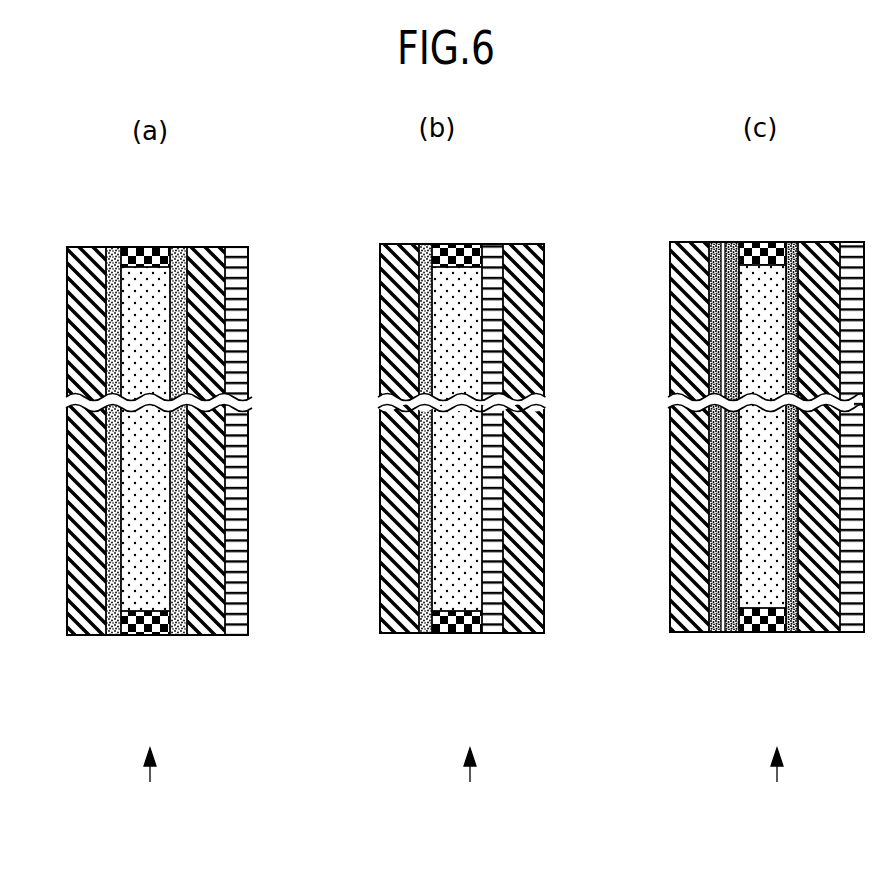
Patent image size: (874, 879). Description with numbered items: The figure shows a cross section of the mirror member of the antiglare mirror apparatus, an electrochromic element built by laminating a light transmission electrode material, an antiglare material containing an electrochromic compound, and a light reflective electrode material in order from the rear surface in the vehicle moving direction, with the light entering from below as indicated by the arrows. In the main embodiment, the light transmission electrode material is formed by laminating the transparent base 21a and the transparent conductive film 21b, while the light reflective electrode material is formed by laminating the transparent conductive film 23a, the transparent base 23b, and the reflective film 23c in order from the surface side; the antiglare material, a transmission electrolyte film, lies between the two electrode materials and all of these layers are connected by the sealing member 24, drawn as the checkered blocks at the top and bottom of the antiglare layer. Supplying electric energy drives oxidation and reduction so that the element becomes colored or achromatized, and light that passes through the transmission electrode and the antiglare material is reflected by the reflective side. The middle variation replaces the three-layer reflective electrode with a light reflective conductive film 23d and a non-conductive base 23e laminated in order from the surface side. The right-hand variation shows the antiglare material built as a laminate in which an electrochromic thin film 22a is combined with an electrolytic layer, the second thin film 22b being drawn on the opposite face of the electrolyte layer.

The transparent base 21a is at (70, 637).
The transparent conductive film 21b is at (114, 637).
The electrochromic thin film 22a is at (732, 583).
The second adhesive layer 22b is at (773, 583).
The transparent conductive film 23a is at (178, 637).
The transparent base 23b is at (214, 624).
The reflective film 23c is at (237, 612).
The light reflective conductive film 23d is at (500, 622).
The non-conductive base 23e is at (537, 620).
The sealing member 24 is at (148, 637).